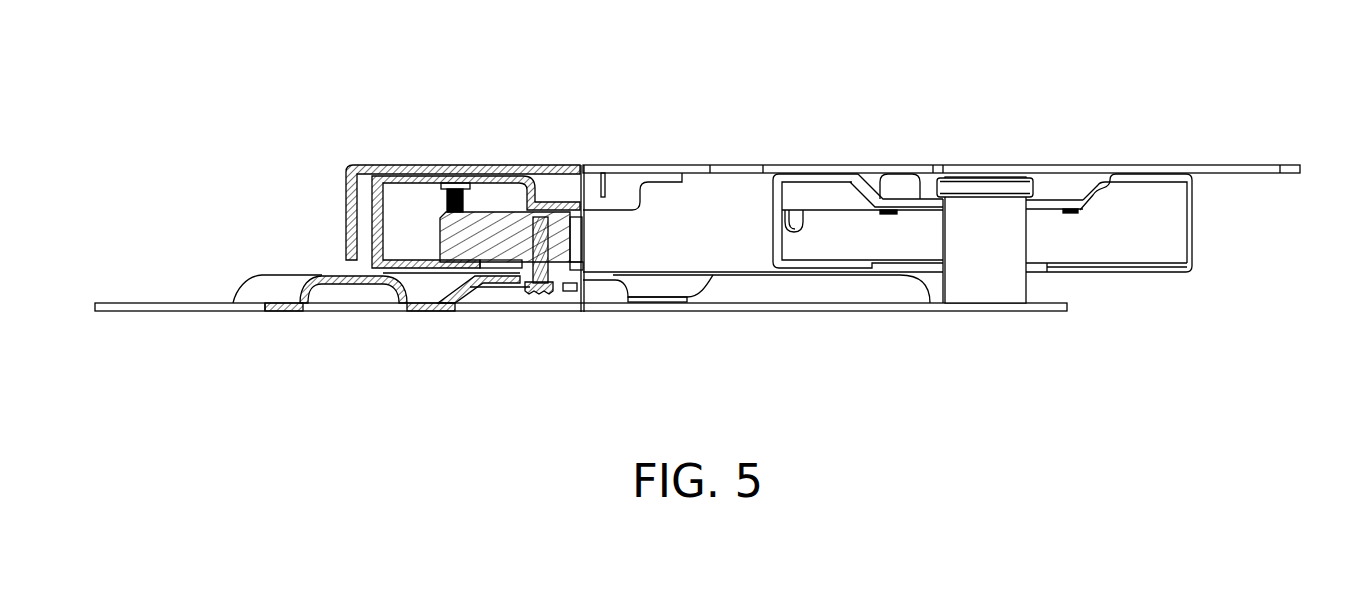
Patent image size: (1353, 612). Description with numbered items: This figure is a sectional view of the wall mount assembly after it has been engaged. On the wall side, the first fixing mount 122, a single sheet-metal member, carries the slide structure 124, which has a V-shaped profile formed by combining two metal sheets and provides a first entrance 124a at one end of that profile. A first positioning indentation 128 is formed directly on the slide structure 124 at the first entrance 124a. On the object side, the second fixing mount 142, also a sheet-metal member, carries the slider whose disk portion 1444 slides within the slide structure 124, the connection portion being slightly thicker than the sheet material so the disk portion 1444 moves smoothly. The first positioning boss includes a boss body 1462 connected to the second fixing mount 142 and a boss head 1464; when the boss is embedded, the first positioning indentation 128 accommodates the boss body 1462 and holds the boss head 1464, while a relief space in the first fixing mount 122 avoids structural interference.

The first fixing mount 122 is at (1240, 168).
The slide structure 124 is at (1192, 203).
The first entrance 124a is at (1123, 220).
The first positioning indentation 128 is at (1033, 207).
The second fixing mount 142 is at (255, 295).
The disk portion 1444 is at (497, 223).
The boss body 1462 is at (1020, 242).
The boss head 1464 is at (985, 187).